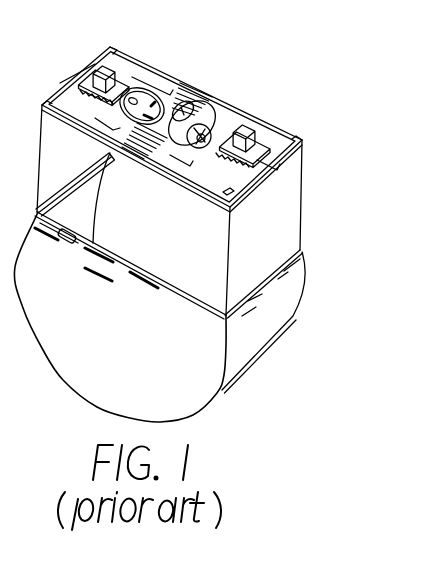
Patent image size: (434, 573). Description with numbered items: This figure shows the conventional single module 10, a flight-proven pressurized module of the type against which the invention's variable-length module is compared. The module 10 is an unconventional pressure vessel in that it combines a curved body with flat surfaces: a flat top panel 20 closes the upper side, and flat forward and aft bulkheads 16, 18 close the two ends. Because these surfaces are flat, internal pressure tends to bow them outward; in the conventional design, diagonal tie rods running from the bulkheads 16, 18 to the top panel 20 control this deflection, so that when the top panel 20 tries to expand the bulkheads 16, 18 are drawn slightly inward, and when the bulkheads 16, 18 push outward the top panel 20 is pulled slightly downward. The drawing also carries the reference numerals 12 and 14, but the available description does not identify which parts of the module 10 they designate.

The conventional single module 10 is at (93, 385).
The lower rim of housing 12 is at (266, 342).
The clip 14 is at (80, 218).
The forward bulkhead 16 is at (288, 231).
The aft bulkhead 18 is at (161, 358).
The top panel 20 is at (135, 60).